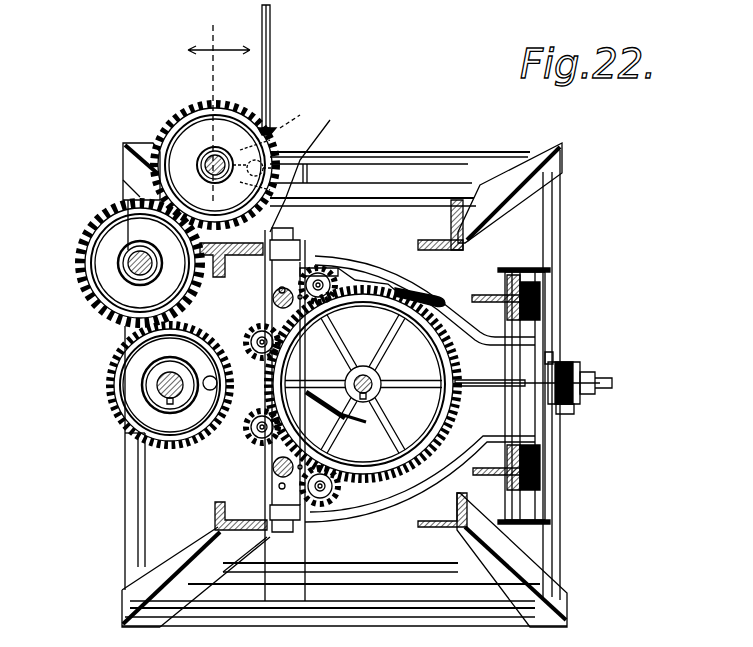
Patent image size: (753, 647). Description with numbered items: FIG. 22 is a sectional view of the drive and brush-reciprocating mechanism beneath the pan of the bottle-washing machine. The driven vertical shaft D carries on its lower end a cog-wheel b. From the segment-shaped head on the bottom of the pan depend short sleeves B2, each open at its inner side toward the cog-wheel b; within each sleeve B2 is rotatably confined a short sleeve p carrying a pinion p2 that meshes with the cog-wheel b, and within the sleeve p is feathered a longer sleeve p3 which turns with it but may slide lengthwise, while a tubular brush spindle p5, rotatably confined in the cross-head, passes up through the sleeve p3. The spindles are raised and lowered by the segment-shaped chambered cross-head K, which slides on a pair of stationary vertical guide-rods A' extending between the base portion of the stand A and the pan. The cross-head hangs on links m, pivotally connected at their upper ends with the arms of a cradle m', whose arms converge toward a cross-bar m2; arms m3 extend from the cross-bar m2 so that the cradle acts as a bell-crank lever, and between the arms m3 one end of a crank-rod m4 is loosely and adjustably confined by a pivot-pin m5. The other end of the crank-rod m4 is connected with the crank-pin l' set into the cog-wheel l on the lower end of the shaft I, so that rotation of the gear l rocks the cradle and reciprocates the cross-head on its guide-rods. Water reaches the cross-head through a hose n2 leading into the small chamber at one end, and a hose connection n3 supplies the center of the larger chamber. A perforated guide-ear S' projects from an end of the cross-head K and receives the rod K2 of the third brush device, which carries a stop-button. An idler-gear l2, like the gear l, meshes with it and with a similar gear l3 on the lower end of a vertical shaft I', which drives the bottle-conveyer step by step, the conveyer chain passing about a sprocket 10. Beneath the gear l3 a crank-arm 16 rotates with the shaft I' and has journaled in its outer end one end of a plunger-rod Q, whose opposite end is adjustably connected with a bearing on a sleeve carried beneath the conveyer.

The stand A is at (324, 366).
The plunger-rod Q is at (270, 58).
The sprocket 10 is at (219, 115).
The vertical shaft I' is at (200, 165).
The gear l3 is at (197, 123).
The idler-gear l2 is at (85, 224).
The cross-head K is at (140, 353).
The cog-wheel l is at (137, 385).
The shaft I is at (145, 400).
The crank-pin l' is at (122, 465).
The vertical shaft D is at (372, 390).
The hose connection n3 is at (354, 380).
The sleeve p3 is at (320, 418).
The short sleeve B2 is at (330, 272).
The tubular spindle p5 is at (350, 268).
The short sleeve p is at (345, 268).
The pinion p2 is at (385, 280).
The links m is at (309, 388).
The cradle m' is at (455, 339).
The perforated guide-ear S' is at (257, 382).
The guide-rods A' is at (223, 382).
The rod K2 is at (270, 245).
The crank-arm 16 is at (272, 132).
The hose n2 is at (448, 290).
The cross-bar m2 is at (530, 345).
The cog-wheel b is at (480, 398).
The arms m3 is at (565, 385).
The crank-rod m4 is at (612, 383).
The pivot-pin m5 is at (575, 410).